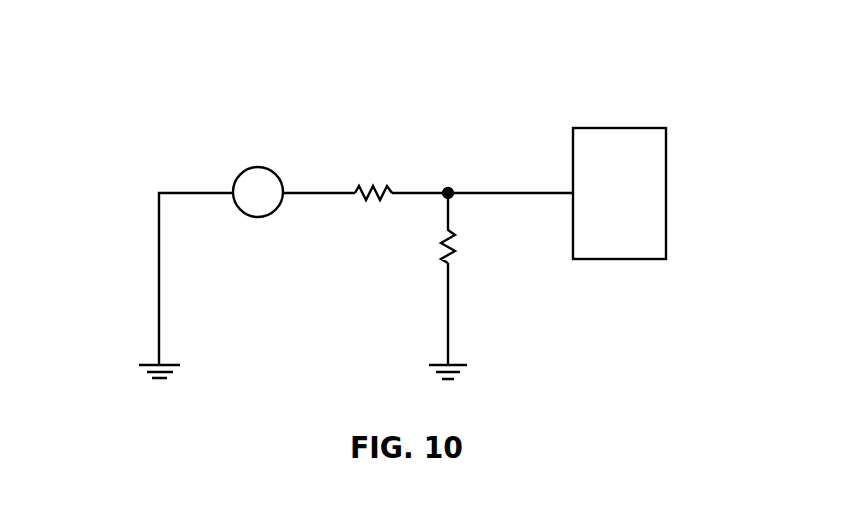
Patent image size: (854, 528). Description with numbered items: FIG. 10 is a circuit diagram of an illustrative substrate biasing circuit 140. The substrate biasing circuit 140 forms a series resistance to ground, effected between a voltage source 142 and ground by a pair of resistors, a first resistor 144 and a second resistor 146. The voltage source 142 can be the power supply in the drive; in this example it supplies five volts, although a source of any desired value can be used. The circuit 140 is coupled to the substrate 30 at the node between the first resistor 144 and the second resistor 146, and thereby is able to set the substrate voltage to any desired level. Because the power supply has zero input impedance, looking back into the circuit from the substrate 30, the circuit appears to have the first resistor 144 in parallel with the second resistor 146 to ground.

The substrate biasing circuit 140 is at (117, 121).
The voltage source 142 is at (258, 167).
The resistor R1 144 is at (372, 185).
The resistor R2 146 is at (455, 245).
The substrate 30 is at (666, 162).